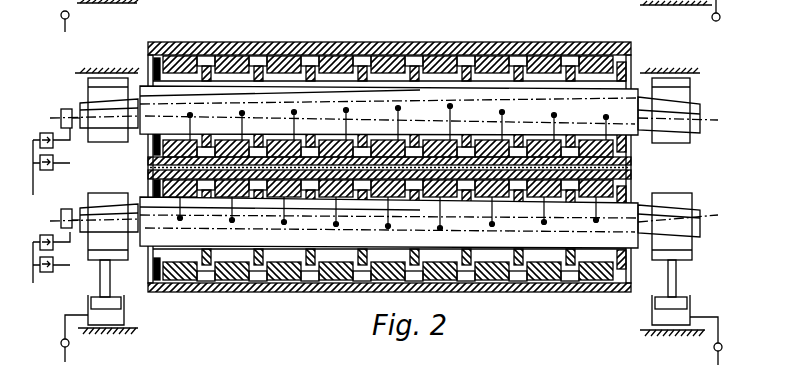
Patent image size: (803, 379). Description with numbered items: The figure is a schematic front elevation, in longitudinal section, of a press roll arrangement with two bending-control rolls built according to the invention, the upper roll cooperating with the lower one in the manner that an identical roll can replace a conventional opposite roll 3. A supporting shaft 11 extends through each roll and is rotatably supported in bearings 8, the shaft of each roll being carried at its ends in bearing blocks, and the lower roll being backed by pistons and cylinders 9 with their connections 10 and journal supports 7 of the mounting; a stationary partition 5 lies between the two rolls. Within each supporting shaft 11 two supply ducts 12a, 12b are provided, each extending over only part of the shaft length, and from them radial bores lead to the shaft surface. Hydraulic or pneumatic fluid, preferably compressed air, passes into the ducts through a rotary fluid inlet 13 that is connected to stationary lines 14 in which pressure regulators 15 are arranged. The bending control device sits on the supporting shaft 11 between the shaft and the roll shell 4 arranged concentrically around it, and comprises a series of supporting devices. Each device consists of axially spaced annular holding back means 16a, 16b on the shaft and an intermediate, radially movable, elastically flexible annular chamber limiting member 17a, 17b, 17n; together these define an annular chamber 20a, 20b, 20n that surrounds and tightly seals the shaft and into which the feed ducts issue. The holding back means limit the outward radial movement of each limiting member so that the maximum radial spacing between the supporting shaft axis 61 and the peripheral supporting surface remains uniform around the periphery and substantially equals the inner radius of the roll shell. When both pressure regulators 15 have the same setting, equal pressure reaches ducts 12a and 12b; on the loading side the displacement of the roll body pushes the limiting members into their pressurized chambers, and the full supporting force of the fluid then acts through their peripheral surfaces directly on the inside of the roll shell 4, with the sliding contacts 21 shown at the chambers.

The opposite roll 3 is at (482, 366).
The roll shell 4 is at (306, 44).
The partition wall 5 is at (632, 168).
The bearing 7 is at (88, 97).
The bearings 8 is at (113, 200).
The hydraulic cylinder 9 is at (93, 302).
The pressure connection 10 is at (61, 343).
The supporting shaft 11 is at (384, 92).
The supply duct 12a is at (436, 88).
The supply duct 12b is at (486, 111).
The rotary fluid inlet 13 is at (56, 108).
The stationary lines 14 is at (68, 148).
The pressure regulators 15 is at (40, 138).
The holding back means 16a is at (150, 78).
The holding back means 16b is at (207, 64).
The annular chamber limiting member 17a is at (187, 62).
The annular chamber limiting member 17b is at (247, 58).
The annular chamber limiting member 17n is at (594, 58).
The annular chamber 20a is at (189, 200).
The annular chamber 20b is at (244, 200).
The annular chamber 20n is at (588, 200).
The contact 21 is at (323, 212).
The supporting shaft axis 61 is at (200, 202).